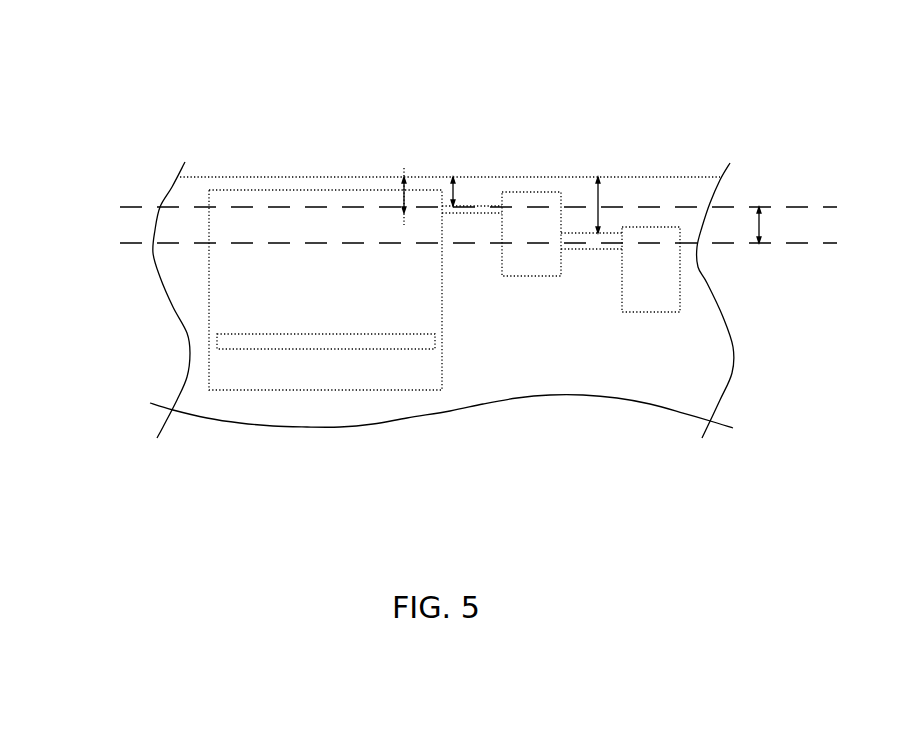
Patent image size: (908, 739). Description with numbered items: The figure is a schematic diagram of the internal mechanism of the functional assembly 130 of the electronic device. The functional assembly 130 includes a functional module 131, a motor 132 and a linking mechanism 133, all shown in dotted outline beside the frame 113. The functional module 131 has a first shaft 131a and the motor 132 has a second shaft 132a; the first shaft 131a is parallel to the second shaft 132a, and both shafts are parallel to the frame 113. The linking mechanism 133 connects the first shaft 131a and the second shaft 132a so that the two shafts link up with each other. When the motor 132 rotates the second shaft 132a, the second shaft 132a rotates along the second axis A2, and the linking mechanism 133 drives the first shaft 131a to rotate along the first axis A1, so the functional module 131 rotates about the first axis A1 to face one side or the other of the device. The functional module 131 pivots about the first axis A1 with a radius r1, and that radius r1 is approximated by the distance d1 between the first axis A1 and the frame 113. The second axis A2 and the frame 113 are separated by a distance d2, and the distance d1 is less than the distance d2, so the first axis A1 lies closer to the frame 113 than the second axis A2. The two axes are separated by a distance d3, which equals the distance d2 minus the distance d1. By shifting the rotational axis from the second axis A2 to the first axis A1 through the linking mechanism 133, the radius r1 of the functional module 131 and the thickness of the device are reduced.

The functional assembly 130 is at (80, 26).
The frame 113 is at (345, 176).
The functional module 131 is at (382, 343).
The first shaft 131a is at (485, 202).
The motor 132 is at (652, 298).
The second shaft 132a is at (587, 252).
The linking mechanism 133 is at (532, 258).
The radius r1 is at (406, 196).
The distance between first axis and frame d1 is at (455, 185).
The distance between second axis and frame d2 is at (602, 197).
The distance between first axis and second axis d3 is at (760, 224).
The first axis A1 is at (827, 207).
The second axis A2 is at (827, 242).